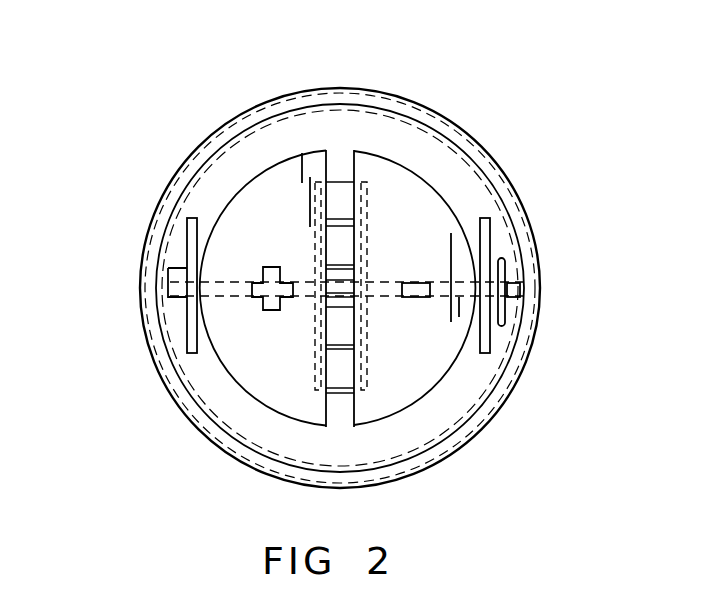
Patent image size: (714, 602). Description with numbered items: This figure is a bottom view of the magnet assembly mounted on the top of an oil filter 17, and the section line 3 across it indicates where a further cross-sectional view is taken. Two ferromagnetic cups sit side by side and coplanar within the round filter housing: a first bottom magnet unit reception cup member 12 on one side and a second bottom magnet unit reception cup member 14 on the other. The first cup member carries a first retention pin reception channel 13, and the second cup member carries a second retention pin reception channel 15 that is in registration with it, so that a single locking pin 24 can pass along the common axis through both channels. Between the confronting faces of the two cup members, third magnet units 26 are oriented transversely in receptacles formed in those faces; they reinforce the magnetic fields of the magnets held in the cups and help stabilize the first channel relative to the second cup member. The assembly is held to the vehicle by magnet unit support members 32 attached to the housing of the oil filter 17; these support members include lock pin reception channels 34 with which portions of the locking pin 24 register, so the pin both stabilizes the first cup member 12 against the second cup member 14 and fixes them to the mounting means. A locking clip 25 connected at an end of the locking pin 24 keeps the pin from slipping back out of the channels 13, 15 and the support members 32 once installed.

The section line 3- 3 is at (125, 289).
The first bottom magnet unit reception cup member 12 is at (253, 357).
The first retention pin reception channel 13 is at (237, 288).
The second bottom magnet unit reception cup member 14 is at (407, 367).
The second retention pin reception channel 15 is at (383, 283).
The oil filter 17 is at (330, 87).
The locking pin 24 is at (512, 283).
The locking clip 25 is at (498, 322).
The third magnet units 26 is at (340, 368).
The magnet unit support members 32 is at (187, 218).
The lock pin reception channels 34 is at (186, 284).